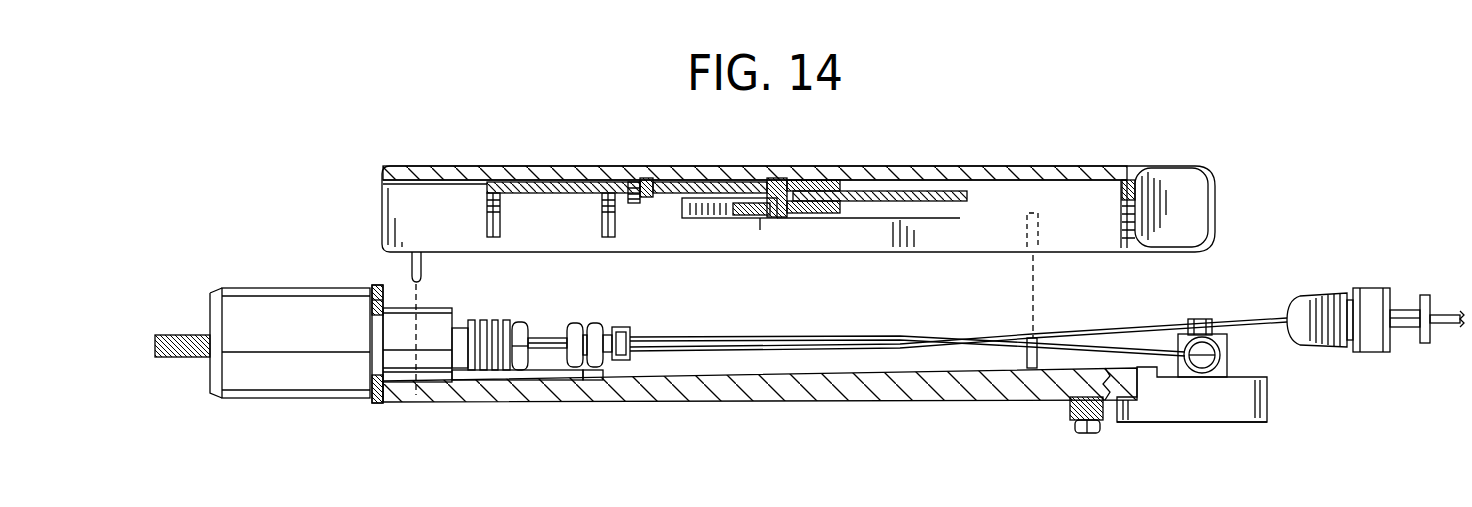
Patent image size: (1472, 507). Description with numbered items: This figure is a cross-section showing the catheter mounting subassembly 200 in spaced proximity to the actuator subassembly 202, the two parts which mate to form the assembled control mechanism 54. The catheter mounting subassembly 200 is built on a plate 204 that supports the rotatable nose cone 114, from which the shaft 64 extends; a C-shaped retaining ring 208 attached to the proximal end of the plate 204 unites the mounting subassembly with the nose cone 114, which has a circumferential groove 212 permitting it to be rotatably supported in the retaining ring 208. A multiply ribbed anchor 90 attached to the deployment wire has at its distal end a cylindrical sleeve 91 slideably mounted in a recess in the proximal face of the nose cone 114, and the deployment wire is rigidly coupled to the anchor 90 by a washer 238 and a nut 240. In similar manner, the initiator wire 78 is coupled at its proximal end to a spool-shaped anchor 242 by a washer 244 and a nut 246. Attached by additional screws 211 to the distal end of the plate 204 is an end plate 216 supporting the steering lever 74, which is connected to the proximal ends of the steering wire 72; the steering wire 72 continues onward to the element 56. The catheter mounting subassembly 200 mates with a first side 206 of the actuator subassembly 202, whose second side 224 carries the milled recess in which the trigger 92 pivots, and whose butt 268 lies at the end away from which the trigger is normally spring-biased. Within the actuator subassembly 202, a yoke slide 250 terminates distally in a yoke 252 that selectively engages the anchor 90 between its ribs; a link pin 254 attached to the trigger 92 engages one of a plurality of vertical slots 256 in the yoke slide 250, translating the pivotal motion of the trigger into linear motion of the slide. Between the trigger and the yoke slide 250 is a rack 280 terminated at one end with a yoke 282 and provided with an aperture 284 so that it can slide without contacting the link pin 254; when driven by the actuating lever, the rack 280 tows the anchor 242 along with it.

The control mechanism 54 is at (413, 165).
The yoke slide 250 is at (578, 180).
The vertical slots 256 is at (651, 186).
The link pin 254 is at (768, 205).
The second side 224 is at (1052, 166).
The actuator subassembly 202 is at (1170, 161).
The butt 268 is at (1200, 206).
The yoke 252 is at (487, 222).
The yoke 282 is at (602, 208).
The aperture 284 is at (672, 205).
The rack 280 is at (952, 208).
The trigger 92 is at (764, 222).
The first side 206 is at (908, 250).
The circumferential groove 212 is at (372, 300).
The cylindrical sleeve 91 is at (466, 330).
The multiply ribbed anchor 90 is at (488, 321).
The nut 240 is at (520, 330).
The initiator wire 78 is at (545, 337).
The nut 246 is at (574, 330).
The spool-shaped anchor 242 is at (617, 330).
The steering wire 72 is at (844, 340).
The connector 56 is at (1250, 315).
The shaft 64 is at (190, 350).
The nose cone 114 is at (307, 385).
The C-shaped retaining ring 208 is at (390, 382).
The washer 238 is at (527, 372).
The washer 244 is at (595, 370).
The plate 204 is at (882, 395).
The steering lever 74 is at (1232, 372).
The screws 211 is at (1083, 435).
The end plate 216 is at (1147, 410).
The catheter mounting subassembly 200 is at (1233, 424).